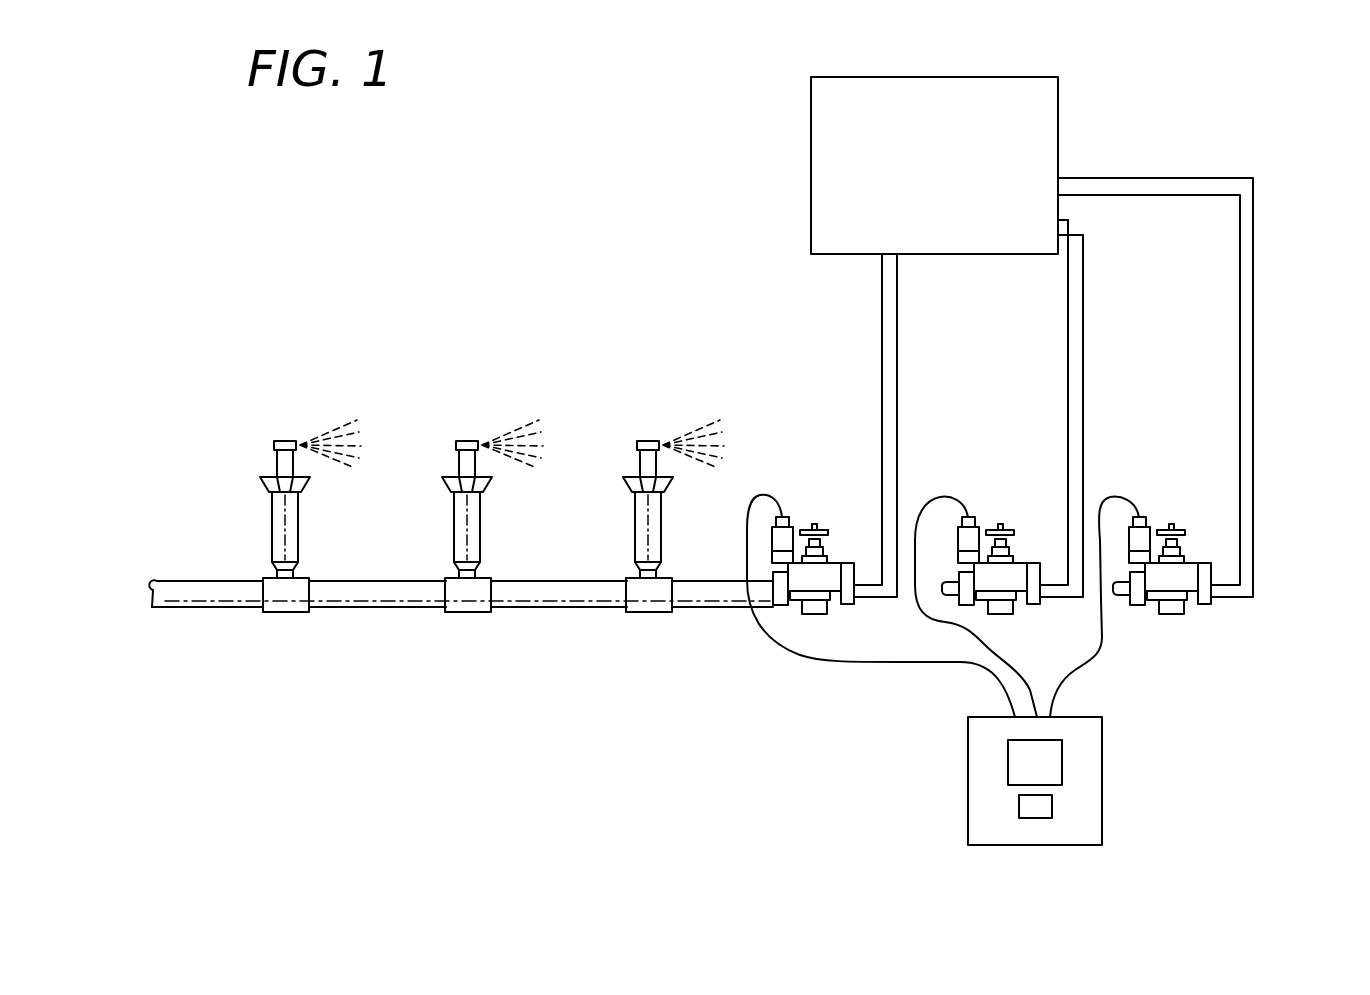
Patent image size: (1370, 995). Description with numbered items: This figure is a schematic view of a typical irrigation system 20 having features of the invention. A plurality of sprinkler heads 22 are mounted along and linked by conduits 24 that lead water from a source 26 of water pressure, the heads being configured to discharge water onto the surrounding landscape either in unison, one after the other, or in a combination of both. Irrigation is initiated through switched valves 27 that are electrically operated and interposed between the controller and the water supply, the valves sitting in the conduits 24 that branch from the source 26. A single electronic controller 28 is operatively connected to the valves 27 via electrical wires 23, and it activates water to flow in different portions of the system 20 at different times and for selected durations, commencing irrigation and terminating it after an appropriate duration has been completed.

The irrigation system 20 is at (431, 251).
The sprinkler heads 22 is at (733, 398).
The electrical wires 23 is at (897, 665).
The conduits 24 is at (553, 605).
The source of water pressure 26 is at (1058, 128).
The switched valves 27 is at (977, 540).
The electronic controller 28 is at (1102, 782).